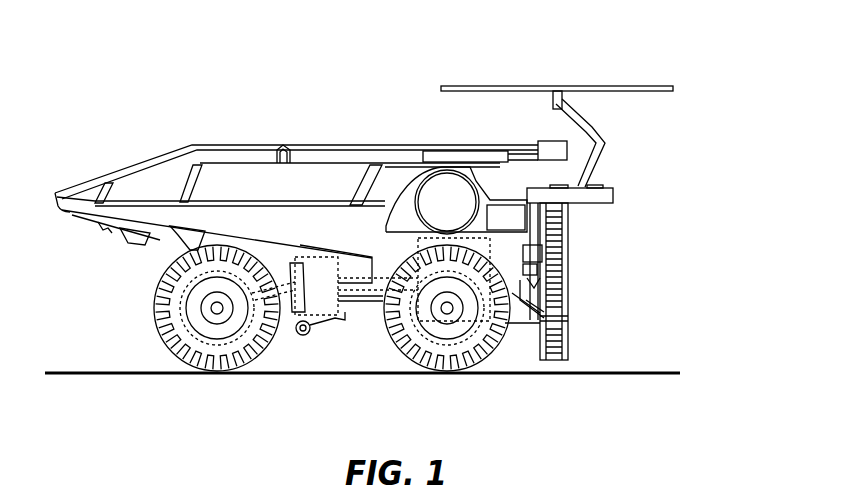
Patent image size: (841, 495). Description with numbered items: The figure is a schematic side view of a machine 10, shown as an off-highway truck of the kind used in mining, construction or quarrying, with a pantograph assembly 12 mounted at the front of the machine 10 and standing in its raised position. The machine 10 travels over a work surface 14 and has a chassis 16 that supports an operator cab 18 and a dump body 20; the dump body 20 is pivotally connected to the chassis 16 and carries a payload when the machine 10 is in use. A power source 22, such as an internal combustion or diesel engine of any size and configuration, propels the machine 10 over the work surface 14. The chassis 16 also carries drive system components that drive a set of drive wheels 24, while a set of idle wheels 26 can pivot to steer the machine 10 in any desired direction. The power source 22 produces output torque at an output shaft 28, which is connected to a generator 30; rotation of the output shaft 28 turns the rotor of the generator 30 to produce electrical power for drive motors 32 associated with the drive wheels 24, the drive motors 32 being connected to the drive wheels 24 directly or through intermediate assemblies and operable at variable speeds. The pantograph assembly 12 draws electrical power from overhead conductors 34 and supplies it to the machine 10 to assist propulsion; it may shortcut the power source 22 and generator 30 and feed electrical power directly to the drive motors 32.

The machine 10 is at (676, 40).
The pantograph assembly 12 is at (628, 119).
The work surface 14 is at (574, 374).
The chassis 16 is at (349, 323).
The operator cab 18 is at (478, 190).
The dump body 20 is at (320, 145).
The power source 22 is at (480, 323).
The drive wheels 24 is at (255, 350).
The idle wheels 26 is at (412, 368).
The output shaft 28 is at (398, 290).
The generator 30 is at (315, 257).
The drive motors 32 is at (180, 305).
The overhead conductors 34 is at (508, 85).